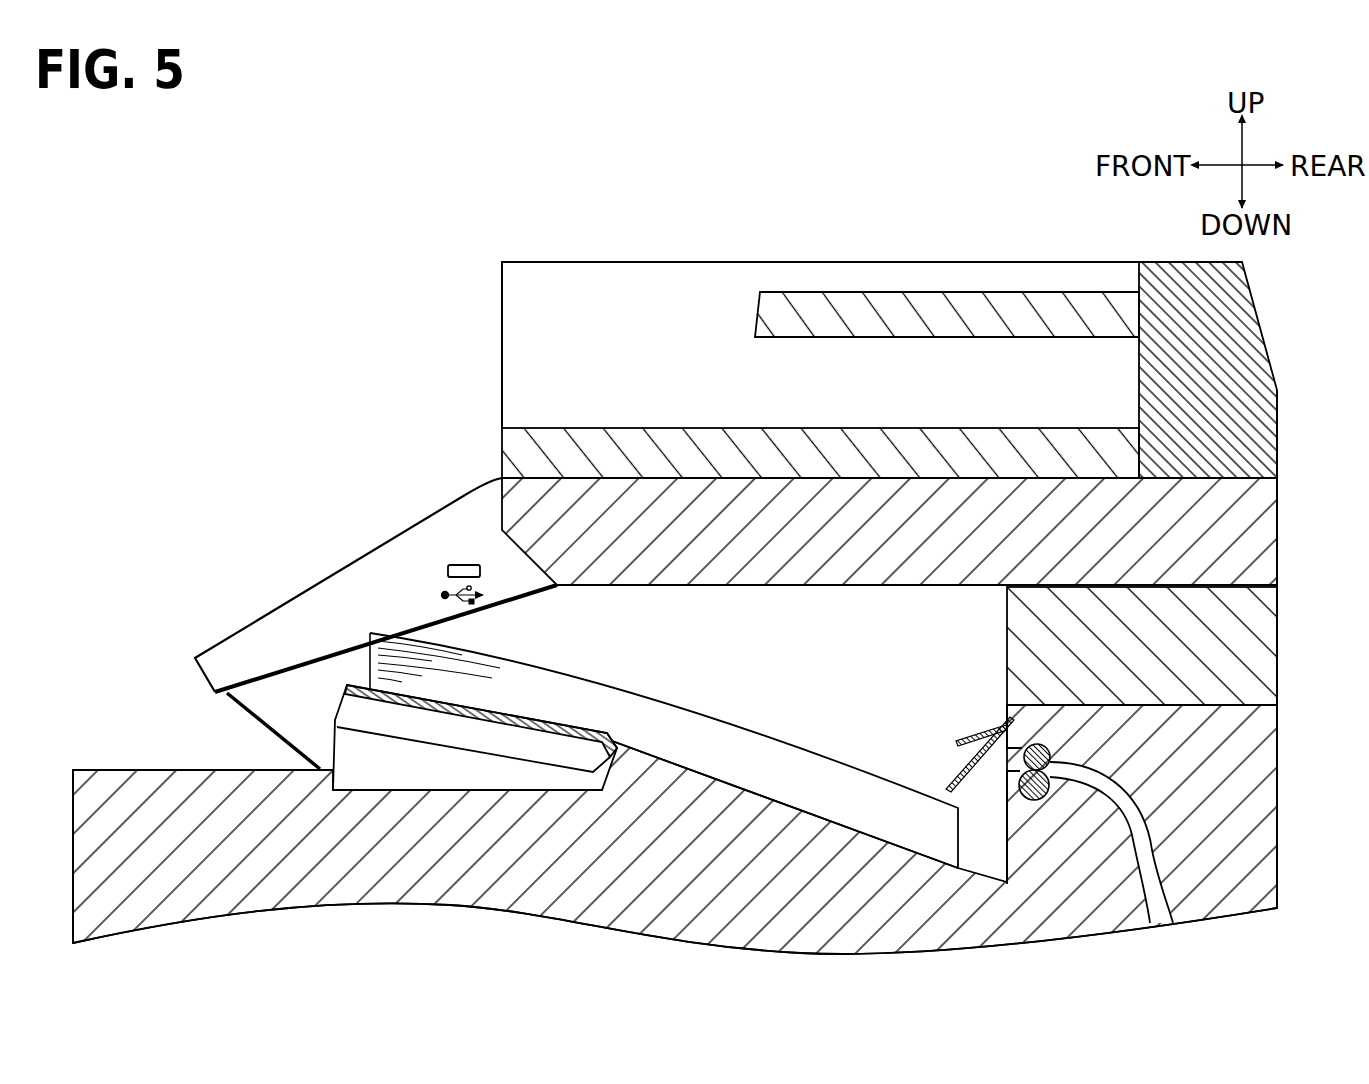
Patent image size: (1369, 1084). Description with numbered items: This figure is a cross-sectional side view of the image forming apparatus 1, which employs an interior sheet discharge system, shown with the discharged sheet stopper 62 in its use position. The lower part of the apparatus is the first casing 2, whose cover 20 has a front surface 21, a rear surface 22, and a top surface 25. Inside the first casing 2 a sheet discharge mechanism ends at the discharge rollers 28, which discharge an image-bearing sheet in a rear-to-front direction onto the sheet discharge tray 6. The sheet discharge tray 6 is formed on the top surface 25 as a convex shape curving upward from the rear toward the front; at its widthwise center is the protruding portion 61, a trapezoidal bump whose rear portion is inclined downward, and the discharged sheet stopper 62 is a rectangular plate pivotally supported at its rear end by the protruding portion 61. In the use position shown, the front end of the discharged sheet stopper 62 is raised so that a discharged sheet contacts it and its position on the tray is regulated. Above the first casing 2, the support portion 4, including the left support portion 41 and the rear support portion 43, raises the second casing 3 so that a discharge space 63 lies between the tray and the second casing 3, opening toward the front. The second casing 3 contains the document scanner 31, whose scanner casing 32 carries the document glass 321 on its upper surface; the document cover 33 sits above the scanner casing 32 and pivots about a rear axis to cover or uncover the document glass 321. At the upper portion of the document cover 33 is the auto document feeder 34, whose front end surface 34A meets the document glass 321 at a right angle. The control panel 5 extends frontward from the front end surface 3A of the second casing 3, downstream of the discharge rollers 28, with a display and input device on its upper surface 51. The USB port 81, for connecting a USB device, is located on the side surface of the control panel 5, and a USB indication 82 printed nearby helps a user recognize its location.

The image forming apparatus 1 is at (162, 210).
The first casing 2 is at (1287, 767).
The second casing 3 is at (491, 255).
The front end surface of the second casing 3A is at (497, 509).
The support portion 4 is at (1287, 637).
The control panel 5 is at (294, 571).
The sheet discharge tray 6 is at (676, 752).
The cover 20 is at (1287, 838).
The front surface 21 is at (66, 783).
The rear surface 22 is at (1280, 800).
The top surface 25 is at (145, 770).
The discharge rollers 28 is at (1022, 753).
The document scanner 31 is at (492, 412).
The scanner casing 32 is at (1280, 532).
The document glass 321 is at (699, 476).
The document cover 33 is at (500, 451).
The auto document feeder 34 is at (962, 259).
The front end surface of the ADF 34A is at (500, 338).
The left support portion 41 is at (258, 720).
The rear support portion 43 is at (1280, 670).
The upper surface of the control panel 51 is at (272, 606).
The protruding portion 61 is at (330, 748).
The discharged sheet stopper 62 is at (528, 716).
The discharge space 63 is at (866, 685).
The USB port 81 is at (457, 565).
The USB indication 82 is at (443, 594).